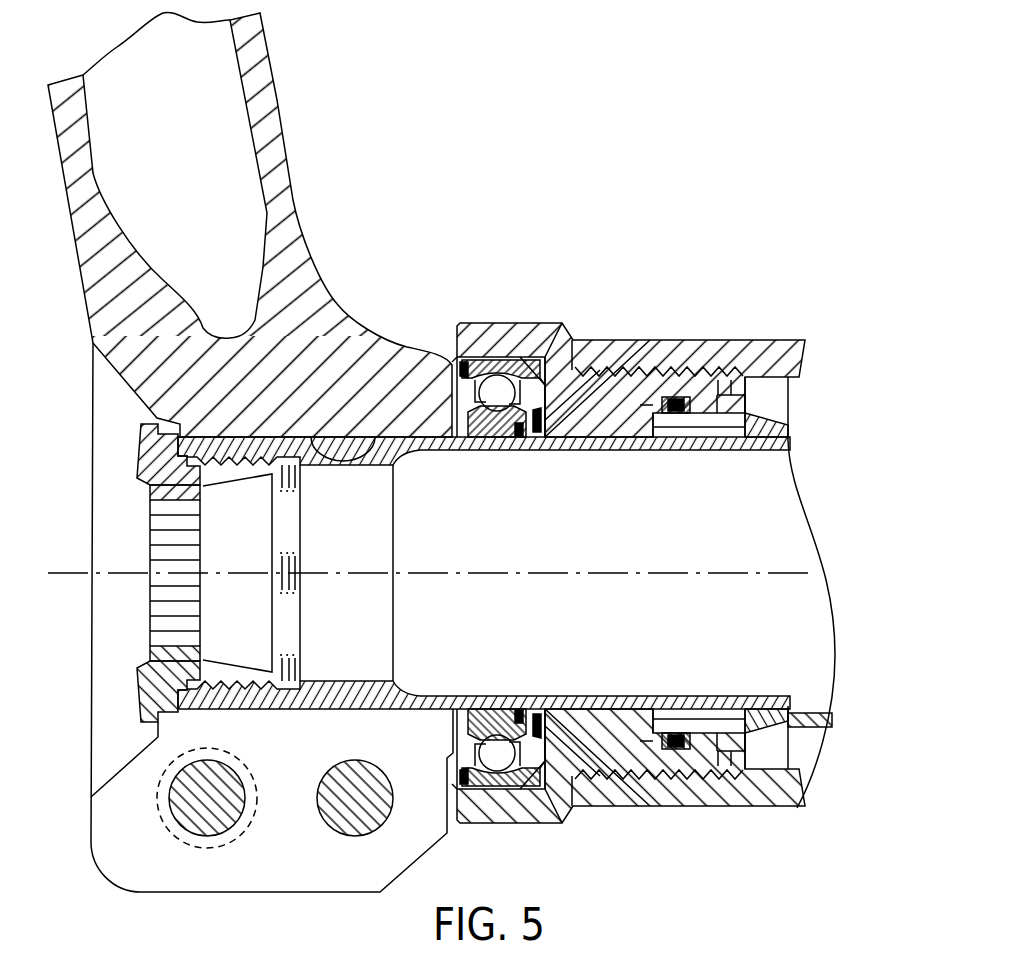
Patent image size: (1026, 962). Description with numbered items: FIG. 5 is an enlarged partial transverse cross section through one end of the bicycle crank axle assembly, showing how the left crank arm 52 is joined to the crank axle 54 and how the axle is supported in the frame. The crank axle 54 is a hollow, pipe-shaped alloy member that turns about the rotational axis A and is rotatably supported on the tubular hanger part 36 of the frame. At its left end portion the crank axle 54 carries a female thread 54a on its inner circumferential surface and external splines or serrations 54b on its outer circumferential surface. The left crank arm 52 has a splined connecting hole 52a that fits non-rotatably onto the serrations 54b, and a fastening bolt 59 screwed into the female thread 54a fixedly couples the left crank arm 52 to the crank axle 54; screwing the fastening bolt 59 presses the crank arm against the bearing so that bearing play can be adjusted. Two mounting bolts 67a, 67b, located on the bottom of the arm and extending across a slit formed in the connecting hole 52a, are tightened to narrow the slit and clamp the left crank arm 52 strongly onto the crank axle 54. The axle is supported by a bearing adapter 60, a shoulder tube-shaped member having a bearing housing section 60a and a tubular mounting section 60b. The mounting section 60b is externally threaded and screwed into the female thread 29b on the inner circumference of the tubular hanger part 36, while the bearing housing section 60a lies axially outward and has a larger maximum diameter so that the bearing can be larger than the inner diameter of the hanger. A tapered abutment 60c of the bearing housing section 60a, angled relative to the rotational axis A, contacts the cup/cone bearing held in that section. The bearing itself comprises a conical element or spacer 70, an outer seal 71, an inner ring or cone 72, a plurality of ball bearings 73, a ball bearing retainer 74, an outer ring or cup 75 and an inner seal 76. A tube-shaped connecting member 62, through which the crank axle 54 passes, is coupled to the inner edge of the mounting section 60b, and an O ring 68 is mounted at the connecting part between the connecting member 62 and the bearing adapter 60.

The left crank arm 52 is at (283, 117).
The splined connecting hole 52a is at (348, 437).
The crank axle 54 is at (728, 452).
The female thread 54a is at (293, 680).
The external splines or serrations 54b is at (173, 410).
The fastening bolt 59 is at (137, 697).
The bearing adapter 60 is at (519, 391).
The bearing housing section 60a is at (545, 345).
The tubular mounting section 60b is at (640, 387).
The tapered abutment 60c is at (570, 340).
The tube-shaped connecting member 62 is at (766, 409).
The O ring 68 is at (665, 412).
The conical element or spacer 70 is at (473, 430).
The outer seal 71 is at (470, 400).
The inner ring or cone 72 is at (448, 437).
The ball bearings or roller elements 73 is at (500, 396).
The ball bearing retainer 74 is at (522, 425).
The outer ring or cup 75 is at (507, 383).
The inner seal 76 is at (573, 438).
The female thread 29b is at (650, 363).
The tubular hanger part 36 is at (753, 340).
The mounting bolt 67a is at (203, 800).
The mounting bolt 67b is at (352, 803).
The rotational axis A is at (845, 573).